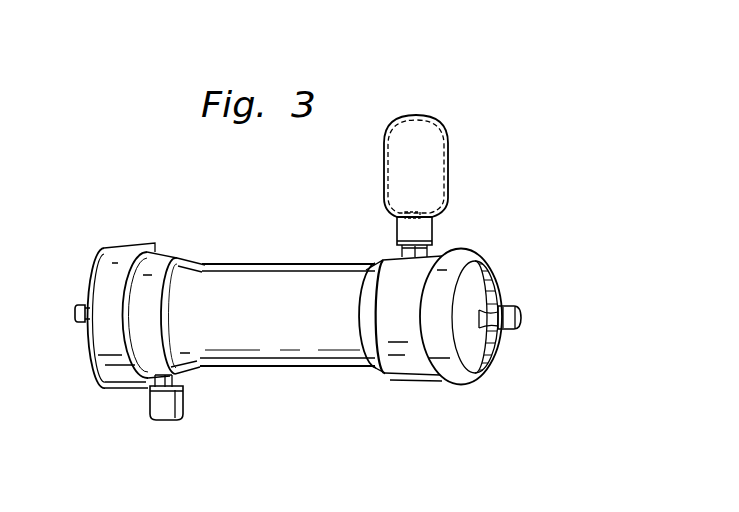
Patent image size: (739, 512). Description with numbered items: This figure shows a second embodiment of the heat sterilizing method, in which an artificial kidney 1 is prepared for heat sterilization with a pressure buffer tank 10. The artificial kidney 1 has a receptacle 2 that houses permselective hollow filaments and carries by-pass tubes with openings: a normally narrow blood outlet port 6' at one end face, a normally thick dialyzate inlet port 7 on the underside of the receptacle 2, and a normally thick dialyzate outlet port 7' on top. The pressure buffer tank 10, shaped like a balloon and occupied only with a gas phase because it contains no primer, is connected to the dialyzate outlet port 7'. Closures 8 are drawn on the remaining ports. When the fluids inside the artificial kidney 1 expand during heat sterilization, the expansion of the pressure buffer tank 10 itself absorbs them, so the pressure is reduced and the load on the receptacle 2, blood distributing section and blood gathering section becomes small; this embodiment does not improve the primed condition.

The artificial kidney 1 is at (271, 264).
The receptacle 2 is at (333, 370).
The dialyzate inlet port 7 is at (196, 403).
The dialyzate outlet port 7' is at (449, 227).
The closure plugs 8 is at (165, 418).
The blood outlet port 6' is at (517, 297).
The pressure buffer tank 10 is at (448, 150).